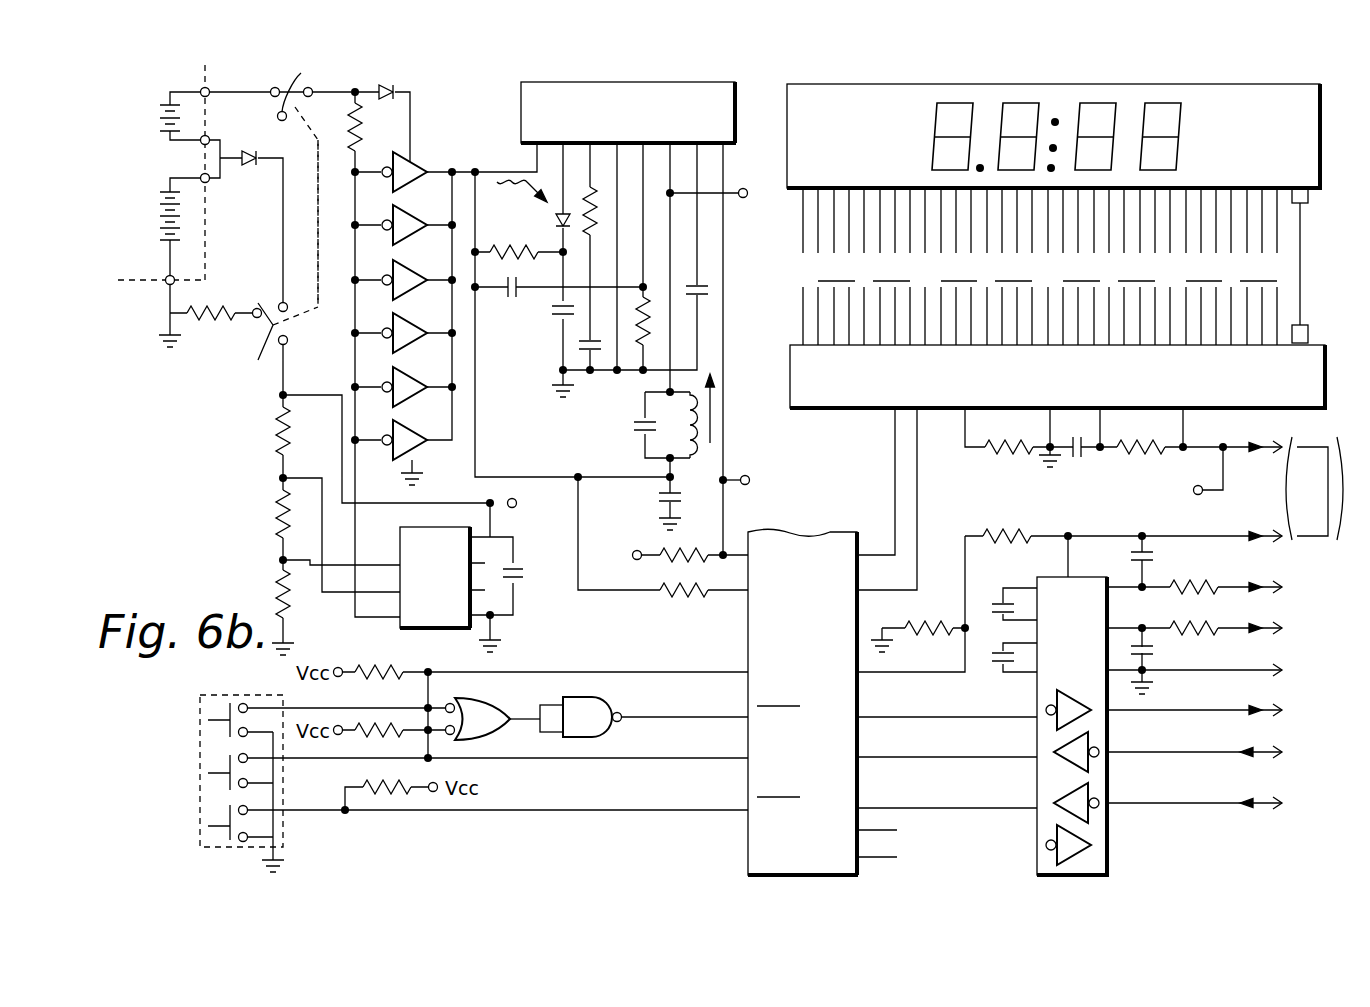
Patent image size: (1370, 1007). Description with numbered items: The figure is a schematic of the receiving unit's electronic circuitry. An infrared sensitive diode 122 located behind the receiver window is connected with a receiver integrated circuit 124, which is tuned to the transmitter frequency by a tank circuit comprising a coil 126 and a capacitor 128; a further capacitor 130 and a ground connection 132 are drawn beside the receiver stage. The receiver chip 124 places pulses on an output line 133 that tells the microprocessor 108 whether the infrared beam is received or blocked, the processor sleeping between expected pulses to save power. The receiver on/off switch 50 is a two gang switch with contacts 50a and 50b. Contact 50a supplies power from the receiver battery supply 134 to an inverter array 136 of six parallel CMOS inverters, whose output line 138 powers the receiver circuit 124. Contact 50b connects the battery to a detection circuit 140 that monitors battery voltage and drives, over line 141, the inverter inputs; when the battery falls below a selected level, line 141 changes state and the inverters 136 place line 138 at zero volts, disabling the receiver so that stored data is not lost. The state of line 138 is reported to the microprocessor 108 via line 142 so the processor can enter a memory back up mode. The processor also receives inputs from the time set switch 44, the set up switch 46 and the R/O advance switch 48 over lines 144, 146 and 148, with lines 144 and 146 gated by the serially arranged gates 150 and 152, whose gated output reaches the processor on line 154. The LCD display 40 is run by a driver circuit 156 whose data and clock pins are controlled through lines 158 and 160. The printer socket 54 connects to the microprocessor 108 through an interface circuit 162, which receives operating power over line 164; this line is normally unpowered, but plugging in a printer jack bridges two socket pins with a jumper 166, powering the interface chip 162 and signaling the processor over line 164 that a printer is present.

The LCD display 40 is at (1240, 93).
The time set switch 44 is at (228, 783).
The set up switch 46 is at (228, 732).
The R/O advance switch 48 is at (228, 828).
The receiver on/off switch 50 is at (323, 290).
The switch contact 50a is at (282, 176).
The switch contact 50b is at (268, 332).
The printer socket 54 is at (1295, 738).
The microprocessor 108 is at (748, 840).
The infrared sensitive diode 122 is at (553, 222).
The receiver integrated circuit 124 is at (703, 85).
The coil 126 is at (693, 462).
The capacitor 128 is at (640, 425).
The capacitor 130 is at (703, 282).
The ground connection 132 is at (636, 375).
The output line 133 is at (728, 505).
The receiver battery supply 134 is at (140, 313).
The inverter array 136 is at (480, 433).
The output line 138 is at (463, 168).
The detection circuit 140 is at (455, 618).
The output line 141 is at (368, 618).
The line 142 is at (581, 545).
The line 144 is at (647, 755).
The line 146 is at (633, 670).
The line 148 is at (600, 812).
The gate 150 is at (467, 727).
The gate 152 is at (577, 727).
The line 154 is at (650, 713).
The driver circuit 156 is at (1232, 392).
The line 158 is at (893, 525).
The line 160 is at (920, 530).
The interface circuit 162 is at (1097, 828).
The line 164 is at (1198, 535).
The jumper 166 is at (1303, 542).